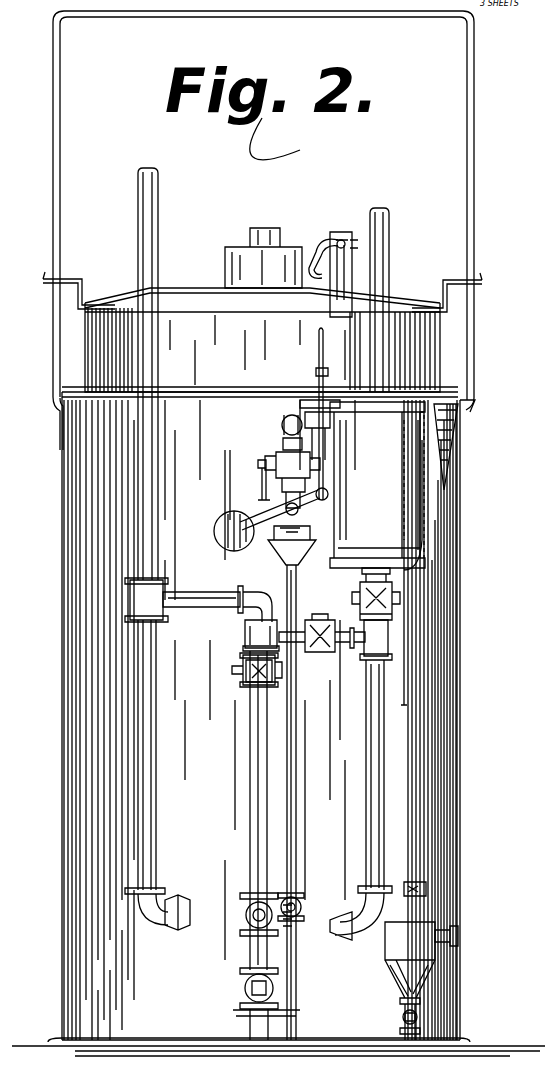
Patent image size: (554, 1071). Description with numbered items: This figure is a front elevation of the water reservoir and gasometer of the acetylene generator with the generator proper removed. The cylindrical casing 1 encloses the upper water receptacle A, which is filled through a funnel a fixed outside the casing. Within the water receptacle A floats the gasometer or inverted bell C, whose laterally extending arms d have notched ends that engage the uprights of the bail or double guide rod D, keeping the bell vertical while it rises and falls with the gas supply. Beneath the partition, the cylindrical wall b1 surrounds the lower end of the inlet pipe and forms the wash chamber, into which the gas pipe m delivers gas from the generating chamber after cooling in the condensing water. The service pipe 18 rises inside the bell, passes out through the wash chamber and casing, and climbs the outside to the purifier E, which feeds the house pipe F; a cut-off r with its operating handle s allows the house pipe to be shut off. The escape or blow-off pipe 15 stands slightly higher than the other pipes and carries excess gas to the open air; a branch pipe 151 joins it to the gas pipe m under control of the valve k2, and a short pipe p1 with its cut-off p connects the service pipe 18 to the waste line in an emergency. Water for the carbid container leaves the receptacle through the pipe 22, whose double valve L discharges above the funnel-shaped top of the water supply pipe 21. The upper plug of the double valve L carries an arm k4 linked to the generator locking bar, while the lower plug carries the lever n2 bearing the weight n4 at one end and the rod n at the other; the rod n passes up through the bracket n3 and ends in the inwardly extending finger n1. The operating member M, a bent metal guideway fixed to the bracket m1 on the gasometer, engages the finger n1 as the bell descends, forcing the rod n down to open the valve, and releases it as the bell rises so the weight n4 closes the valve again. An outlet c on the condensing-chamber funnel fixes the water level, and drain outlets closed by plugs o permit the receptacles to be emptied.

The bail or double guide rod D is at (52, 160).
The water receptacle A is at (62, 738).
The cylindrical casing 1 is at (76, 855).
The funnel a is at (444, 440).
The laterally extending arms d is at (46, 282).
The gasometer or inverted bell C is at (262, 310).
The operating member M is at (331, 240).
The bracket m1 is at (350, 276).
The house pipe F is at (392, 230).
The inwardly extending finger n1 is at (318, 334).
The rod n is at (318, 372).
The guideway or bracket n3 is at (306, 416).
The pipe 22 is at (300, 404).
The double valve L is at (283, 455).
The arm k4 is at (260, 484).
The arm or lever n2 is at (300, 512).
The weight n4 is at (214, 534).
The short pipe p1 is at (280, 562).
The water supply pipe 21 is at (293, 770).
The purifier E is at (377, 485).
The operating handle s is at (406, 698).
The escape or blow-off pipe 15 is at (156, 206).
The branch pipe 151 is at (262, 732).
The valve k2 is at (246, 672).
The pipe m is at (252, 950).
The cut-off p is at (320, 652).
The cut-off r is at (360, 597).
The service pipe 18 is at (372, 828).
The cylindrical wall b1 is at (410, 981).
The outlet plug o is at (420, 886).
The outlet c is at (460, 936).